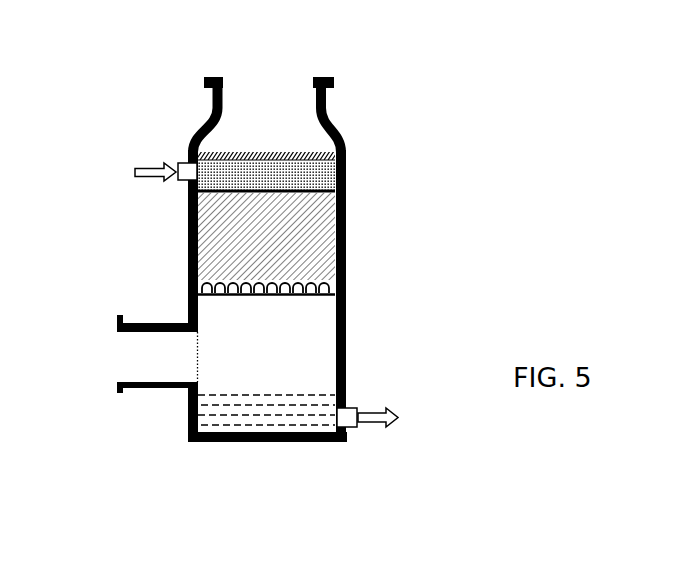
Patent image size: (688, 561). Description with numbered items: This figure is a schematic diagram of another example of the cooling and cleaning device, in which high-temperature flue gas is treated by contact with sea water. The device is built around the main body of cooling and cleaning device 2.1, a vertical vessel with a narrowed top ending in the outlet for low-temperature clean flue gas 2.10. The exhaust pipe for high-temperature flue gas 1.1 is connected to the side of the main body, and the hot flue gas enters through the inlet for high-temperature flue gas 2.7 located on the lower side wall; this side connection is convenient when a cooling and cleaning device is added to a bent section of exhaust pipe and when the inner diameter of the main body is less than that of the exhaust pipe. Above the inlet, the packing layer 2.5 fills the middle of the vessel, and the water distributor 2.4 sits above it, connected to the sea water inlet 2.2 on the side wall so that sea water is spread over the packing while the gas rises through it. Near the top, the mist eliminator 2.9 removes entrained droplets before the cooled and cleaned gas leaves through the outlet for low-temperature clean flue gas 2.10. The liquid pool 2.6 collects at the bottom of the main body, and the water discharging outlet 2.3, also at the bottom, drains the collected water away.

The exhaust pipe for high-temperature flue gas 1.1 is at (150, 387).
The main body of cooling and cleaning device 2.1 is at (190, 270).
The sea water inlet 2.2 is at (175, 162).
The water discharging outlet 2.3 is at (350, 407).
The water distributor 2.4 is at (333, 180).
The packing layer 2.5 is at (330, 262).
The liquid pool 2.6 is at (216, 396).
The inlet for high-temperature flue gas 2.7 is at (195, 356).
The mist eliminator 2.9 is at (242, 152).
The outlet for low-temperature clean flue gas 2.10 is at (297, 86).